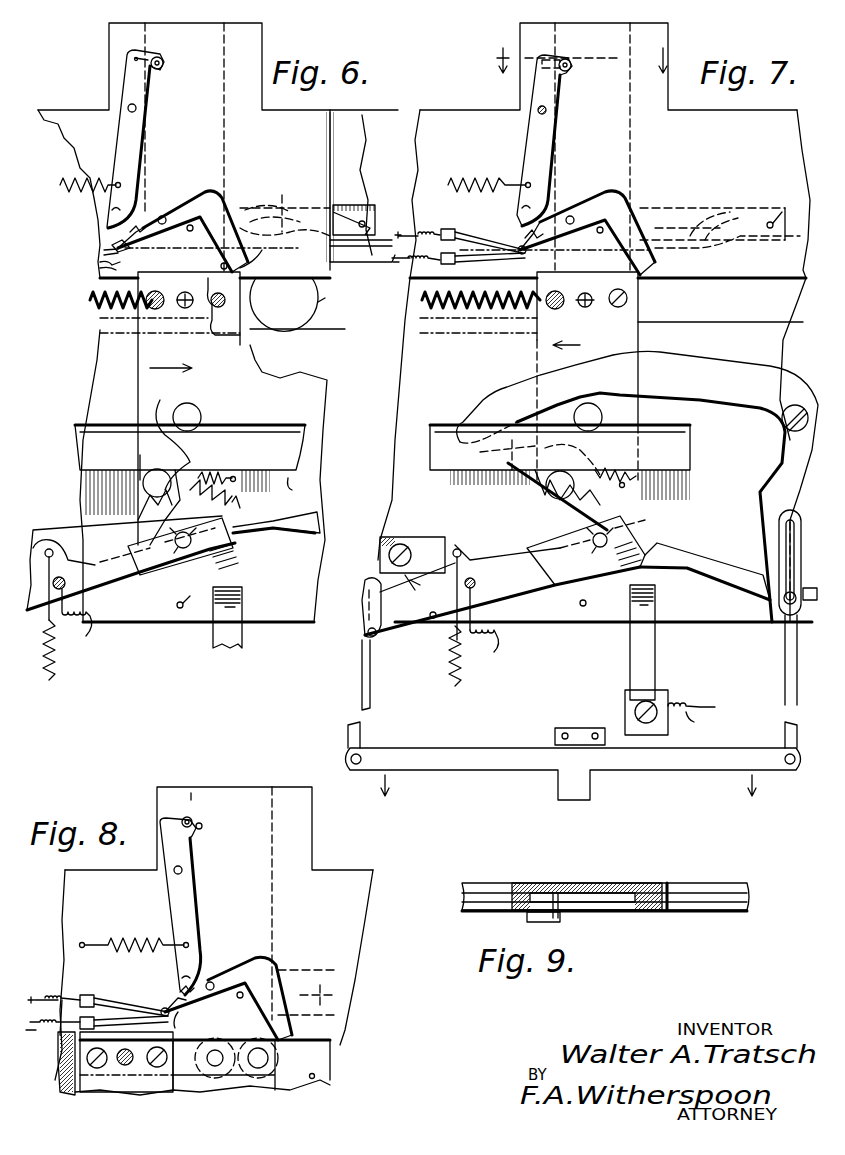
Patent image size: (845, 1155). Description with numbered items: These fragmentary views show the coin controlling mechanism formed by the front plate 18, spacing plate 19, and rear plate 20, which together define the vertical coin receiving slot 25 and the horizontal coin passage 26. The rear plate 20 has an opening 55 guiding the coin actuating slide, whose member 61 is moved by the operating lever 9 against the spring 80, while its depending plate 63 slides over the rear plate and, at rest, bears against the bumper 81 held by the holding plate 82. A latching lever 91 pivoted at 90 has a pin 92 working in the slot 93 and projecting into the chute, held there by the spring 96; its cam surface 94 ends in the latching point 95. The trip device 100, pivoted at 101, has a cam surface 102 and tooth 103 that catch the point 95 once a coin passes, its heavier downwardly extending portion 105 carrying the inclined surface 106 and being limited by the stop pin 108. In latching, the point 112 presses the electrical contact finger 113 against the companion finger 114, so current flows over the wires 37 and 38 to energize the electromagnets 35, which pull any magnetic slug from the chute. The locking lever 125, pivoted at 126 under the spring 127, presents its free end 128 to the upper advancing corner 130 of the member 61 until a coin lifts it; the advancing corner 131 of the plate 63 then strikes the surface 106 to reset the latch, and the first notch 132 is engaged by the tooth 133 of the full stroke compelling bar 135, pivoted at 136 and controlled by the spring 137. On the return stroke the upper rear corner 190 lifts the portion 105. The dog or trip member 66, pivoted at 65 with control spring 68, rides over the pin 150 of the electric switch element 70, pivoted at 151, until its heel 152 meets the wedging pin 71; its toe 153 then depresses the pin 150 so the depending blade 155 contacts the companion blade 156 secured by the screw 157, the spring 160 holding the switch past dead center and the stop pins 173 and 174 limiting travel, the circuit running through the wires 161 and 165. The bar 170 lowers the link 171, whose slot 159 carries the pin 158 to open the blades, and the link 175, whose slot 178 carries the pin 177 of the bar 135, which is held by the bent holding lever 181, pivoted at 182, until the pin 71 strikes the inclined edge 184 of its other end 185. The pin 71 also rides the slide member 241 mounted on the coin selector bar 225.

In FIG. 7, the operating lever 9 is at (587, 60).
In FIG. 9, the front plate 18 is at (740, 878).
In FIG. 6, the middle or spacing plate 19 is at (366, 126).
In FIG. 9, the middle or spacing plate 19 is at (740, 892).
In FIG. 6, the rear plate 20 is at (330, 118).
In FIG. 7, the rear plate 20 is at (478, 116).
In FIG. 8, the rear plate 20 is at (312, 810).
In FIG. 9, the rear plate 20 is at (705, 905).
In FIG. 6, the coin receiving slot 25 is at (142, 33).
In FIG. 8, the coin receiving slot 25 is at (191, 795).
In FIG. 9, the coin receiving slot 25 is at (642, 884).
In FIG. 6, the coin passage 26 is at (343, 329).
In FIG. 8, the electromagnets 35 is at (225, 1070).
In FIG. 7, the wire 37 is at (438, 228).
In FIG. 8, the wire 37 is at (48, 990).
In FIG. 7, the wire 38 is at (410, 264).
In FIG. 8, the wire 38 is at (50, 1030).
In FIG. 6, the opening 55 is at (98, 324).
In FIG. 7, the opening 55 is at (712, 320).
In FIG. 8, the opening 55 is at (310, 1080).
In FIG. 6, the slide member 61 is at (226, 322).
In FIG. 7, the slide member 61 is at (592, 252).
In FIG. 6, the depending plate 63 is at (145, 352).
In FIG. 7, the depending plate 63 is at (537, 350).
In FIG. 8, the depending plate 63 is at (120, 1093).
In FIG. 6, the pivot 65 is at (160, 507).
In FIG. 7, the pivot 65 is at (540, 492).
In FIG. 6, the dog or trip member 66 is at (140, 482).
In FIG. 7, the dog or trip member 66 is at (575, 512).
In FIG. 6, the control spring 68 is at (217, 488).
In FIG. 7, the control spring 68 is at (618, 490).
In FIG. 6, the electric switch element 70 is at (112, 578).
In FIG. 7, the electric switch element 70 is at (520, 578).
In FIG. 6, the wedging pin 71 is at (202, 415).
In FIG. 7, the wedging pin 71 is at (603, 414).
In FIG. 6, the spring 80 is at (88, 296).
In FIG. 7, the spring 80 is at (478, 308).
In FIG. 8, the bumper 81 is at (62, 1098).
In FIG. 8, the holding plate 82 is at (65, 990).
In FIG. 6, the pivot 90 is at (134, 113).
In FIG. 7, the pivot 90 is at (548, 112).
In FIG. 8, the pivot 90 is at (173, 874).
In FIG. 6, the lever 91 is at (120, 147).
In FIG. 7, the lever 91 is at (530, 137).
In FIG. 8, the lever 91 is at (172, 910).
In FIG. 9, the lever 91 is at (535, 920).
In FIG. 6, the pin 92 is at (160, 60).
In FIG. 7, the pin 92 is at (572, 65).
In FIG. 8, the pin 92 is at (192, 815).
In FIG. 9, the pin 92 is at (585, 880).
In FIG. 6, the slot 93 is at (132, 62).
In FIG. 7, the slot 93 is at (560, 55).
In FIG. 8, the slot 93 is at (204, 826).
In FIG. 9, the slot 93 is at (550, 920).
In FIG. 6, the cam surface 94 is at (117, 200).
In FIG. 7, the cam surface 94 is at (525, 200).
In FIG. 6, the latching point 95 is at (112, 218).
In FIG. 7, the latching point 95 is at (522, 218).
In FIG. 8, the latching point 95 is at (182, 974).
In FIG. 6, the spring 96 is at (70, 180).
In FIG. 7, the spring 96 is at (480, 180).
In FIG. 8, the spring 96 is at (136, 942).
In FIG. 6, the trip device 100 is at (192, 204).
In FIG. 7, the trip device 100 is at (600, 200).
In FIG. 8, the trip device 100 is at (255, 950).
In FIG. 6, the pivot 101 is at (178, 207).
In FIG. 7, the pivot 101 is at (578, 214).
In FIG. 8, the pivot 101 is at (216, 980).
In FIG. 6, the cam surface 102 is at (168, 218).
In FIG. 7, the cam surface 102 is at (576, 218).
In FIG. 6, the tooth 103 is at (122, 234).
In FIG. 7, the tooth 103 is at (540, 236).
In FIG. 8, the tooth 103 is at (180, 990).
In FIG. 7, the downwardly extending portion 105 is at (632, 205).
In FIG. 8, the downwardly extending portion 105 is at (275, 973).
In FIG. 6, the inclined surface 106 is at (220, 265).
In FIG. 6, the stop pin 108 is at (186, 234).
In FIG. 7, the stop pin 108 is at (587, 236).
In FIG. 8, the stop pin 108 is at (223, 1001).
In FIG. 6, the point 112 is at (112, 241).
In FIG. 7, the point 112 is at (518, 247).
In FIG. 8, the point 112 is at (160, 1008).
In FIG. 6, the electrical contact finger 113 is at (104, 250).
In FIG. 7, the electrical contact finger 113 is at (486, 240).
In FIG. 8, the electrical contact finger 113 is at (133, 1000).
In FIG. 6, the electrical contact finger 114 is at (100, 266).
In FIG. 7, the electrical contact finger 114 is at (470, 262).
In FIG. 8, the electrical contact finger 114 is at (115, 1023).
In FIG. 6, the locking lever 125 is at (318, 210).
In FIG. 7, the locking lever 125 is at (706, 252).
In FIG. 8, the locking lever 125 is at (320, 995).
In FIG. 6, the pivot 126 is at (372, 205).
In FIG. 7, the pivot 126 is at (785, 202).
In FIG. 6, the spring 127 is at (272, 198).
In FIG. 7, the spring 127 is at (714, 226).
In FIG. 6, the free end 128 is at (264, 209).
In FIG. 6, the upper advancing corner 130 is at (242, 252).
In FIG. 7, the upper advancing corner 130 is at (645, 240).
In FIG. 6, the advancing corner 131 is at (244, 266).
In FIG. 7, the advancing corner 131 is at (630, 275).
In FIG. 8, the advancing corner 131 is at (180, 1023).
In FIG. 6, the first notch 132 is at (237, 498).
In FIG. 6, the tooth 133 is at (234, 505).
In FIG. 6, the full stroke compelling bar 135 is at (112, 532).
In FIG. 7, the full stroke compelling bar 135 is at (712, 564).
In FIG. 7, the pivot 136 is at (395, 537).
In FIG. 7, the spring 137 is at (388, 530).
In FIG. 6, the pin 150 is at (180, 546).
In FIG. 7, the pin 150 is at (586, 550).
In FIG. 6, the pivot 151 is at (66, 582).
In FIG. 7, the pivot 151 is at (476, 583).
In FIG. 6, the heel 152 is at (165, 437).
In FIG. 7, the heel 152 is at (533, 457).
In FIG. 6, the toe 153 is at (138, 566).
In FIG. 7, the toe 153 is at (636, 528).
In FIG. 6, the depending blade 155 is at (238, 554).
In FIG. 7, the depending blade 155 is at (645, 565).
In FIG. 6, the companion blade 156 is at (244, 595).
In FIG. 7, the companion blade 156 is at (658, 598).
In FIG. 7, the screw 157 is at (634, 713).
In FIG. 7, the pin 158 is at (362, 628).
In FIG. 7, the slot 159 is at (362, 590).
In FIG. 6, the spring 160 is at (67, 650).
In FIG. 7, the spring 160 is at (436, 656).
In FIG. 6, the wire 161 is at (91, 622).
In FIG. 7, the wire 161 is at (489, 648).
In FIG. 7, the wire 165 is at (696, 717).
In FIG. 7, the bar 170 is at (462, 752).
In FIG. 7, the link 171 is at (370, 667).
In FIG. 7, the stop pin 173 is at (432, 620).
In FIG. 6, the stop pin 174 is at (180, 594).
In FIG. 7, the stop pin 174 is at (566, 610).
In FIG. 7, the link 175 is at (790, 665).
In FIG. 7, the pin 177 is at (784, 605).
In FIG. 7, the slot 178 is at (786, 538).
In FIG. 7, the bent holding lever 181 is at (672, 368).
In FIG. 7, the pivot 182 is at (787, 408).
In FIG. 7, the inclined edge 184 is at (572, 392).
In FIG. 7, the other end 185 is at (468, 416).
In FIG. 6, the upper rear corner 190 is at (143, 272).
In FIG. 7, the upper rear corner 190 is at (543, 279).
In FIG. 8, the upper rear corner 190 is at (80, 1038).
In FIG. 6, the coin selector bar 225 is at (305, 486).
In FIG. 7, the coin selector bar 225 is at (690, 452).
In FIG. 6, the slide member 241 is at (258, 425).
In FIG. 7, the slide member 241 is at (650, 425).